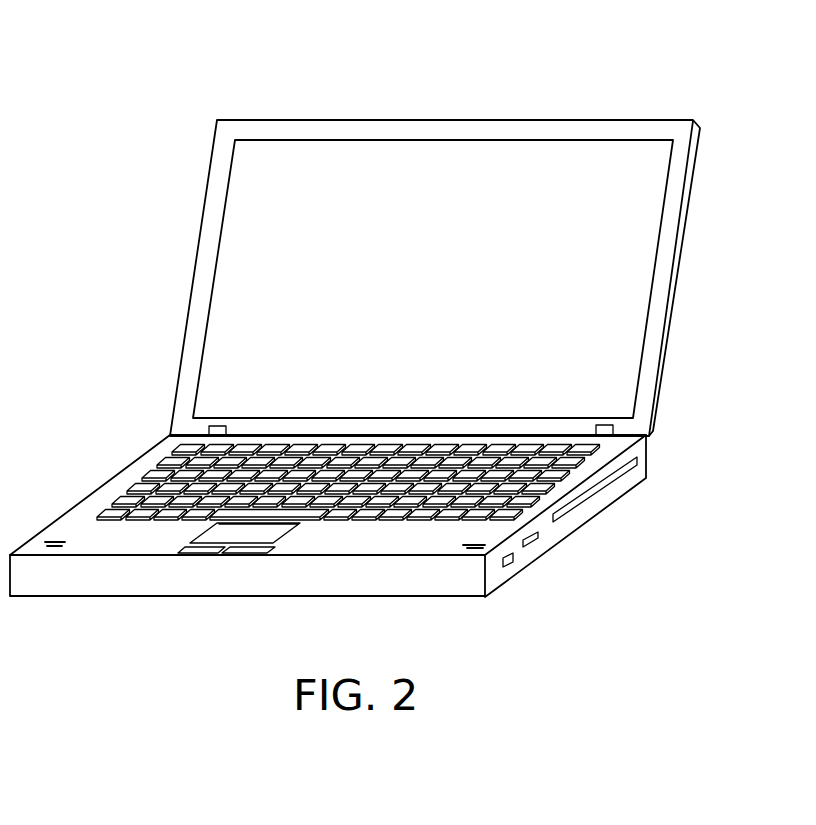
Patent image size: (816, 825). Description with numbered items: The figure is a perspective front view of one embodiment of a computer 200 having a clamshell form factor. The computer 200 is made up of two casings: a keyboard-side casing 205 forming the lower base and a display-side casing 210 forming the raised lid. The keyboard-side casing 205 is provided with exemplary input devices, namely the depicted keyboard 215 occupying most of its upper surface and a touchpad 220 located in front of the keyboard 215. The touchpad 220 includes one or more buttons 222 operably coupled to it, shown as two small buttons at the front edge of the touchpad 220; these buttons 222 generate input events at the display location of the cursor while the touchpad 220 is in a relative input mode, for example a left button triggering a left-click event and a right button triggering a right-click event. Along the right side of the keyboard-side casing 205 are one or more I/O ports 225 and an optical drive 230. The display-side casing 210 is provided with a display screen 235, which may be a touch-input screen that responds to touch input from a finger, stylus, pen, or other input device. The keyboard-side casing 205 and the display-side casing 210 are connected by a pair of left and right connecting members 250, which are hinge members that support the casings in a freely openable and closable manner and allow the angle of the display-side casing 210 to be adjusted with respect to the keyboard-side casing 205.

The computer 200 is at (98, 66).
The keyboard-side casing 205 is at (108, 482).
The display-side casing 210 is at (405, 278).
The keyboard 215 is at (182, 452).
The touchpad 220 is at (215, 533).
The buttons 222 is at (237, 557).
The I/O ports 225 is at (530, 543).
The optical drive 230 is at (637, 458).
The display screen 235 is at (218, 339).
The connecting members (hinge members) 250 is at (208, 428).